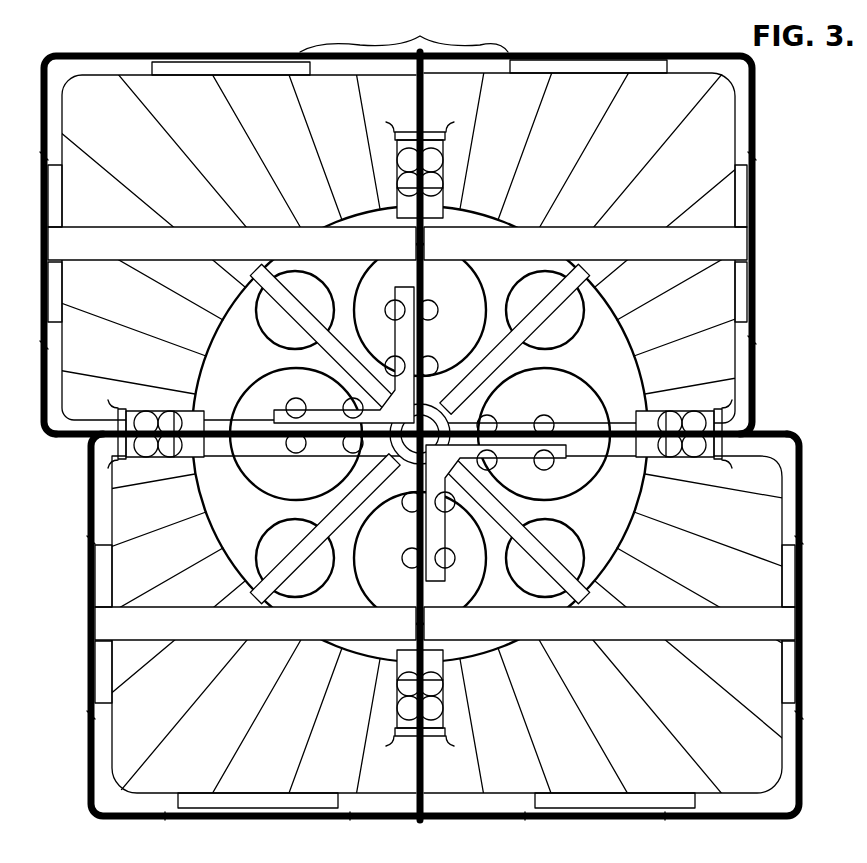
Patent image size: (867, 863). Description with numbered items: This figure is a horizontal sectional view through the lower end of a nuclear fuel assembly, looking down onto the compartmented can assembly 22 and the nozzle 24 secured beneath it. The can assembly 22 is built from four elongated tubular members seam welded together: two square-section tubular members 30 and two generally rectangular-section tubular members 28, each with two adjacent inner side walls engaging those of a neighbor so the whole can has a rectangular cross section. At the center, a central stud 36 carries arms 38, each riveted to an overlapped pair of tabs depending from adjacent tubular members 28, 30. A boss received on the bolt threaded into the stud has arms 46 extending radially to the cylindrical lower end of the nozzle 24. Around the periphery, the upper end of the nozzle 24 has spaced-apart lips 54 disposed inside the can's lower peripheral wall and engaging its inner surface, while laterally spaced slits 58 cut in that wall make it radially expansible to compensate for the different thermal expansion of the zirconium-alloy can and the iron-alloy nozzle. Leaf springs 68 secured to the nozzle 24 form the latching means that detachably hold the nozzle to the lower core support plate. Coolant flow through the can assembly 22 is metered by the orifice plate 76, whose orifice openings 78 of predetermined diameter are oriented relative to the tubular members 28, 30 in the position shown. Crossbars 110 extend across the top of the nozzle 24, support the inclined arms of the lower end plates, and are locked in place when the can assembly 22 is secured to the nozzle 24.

The compartmented can assembly 22 is at (90, 468).
The nozzle 24 is at (752, 850).
The tubular member 28 is at (725, 54).
The tubular member 30 is at (258, 56).
The central stud 36 is at (452, 422).
The arms 38 is at (400, 304).
The arms 46 is at (575, 302).
The lips 54 is at (188, 66).
The slits 58 is at (157, 838).
The leaf springs 68 is at (440, 206).
The orifice plate 76 is at (622, 345).
The orifice openings 78 is at (473, 288).
The crossbars 110 is at (640, 240).